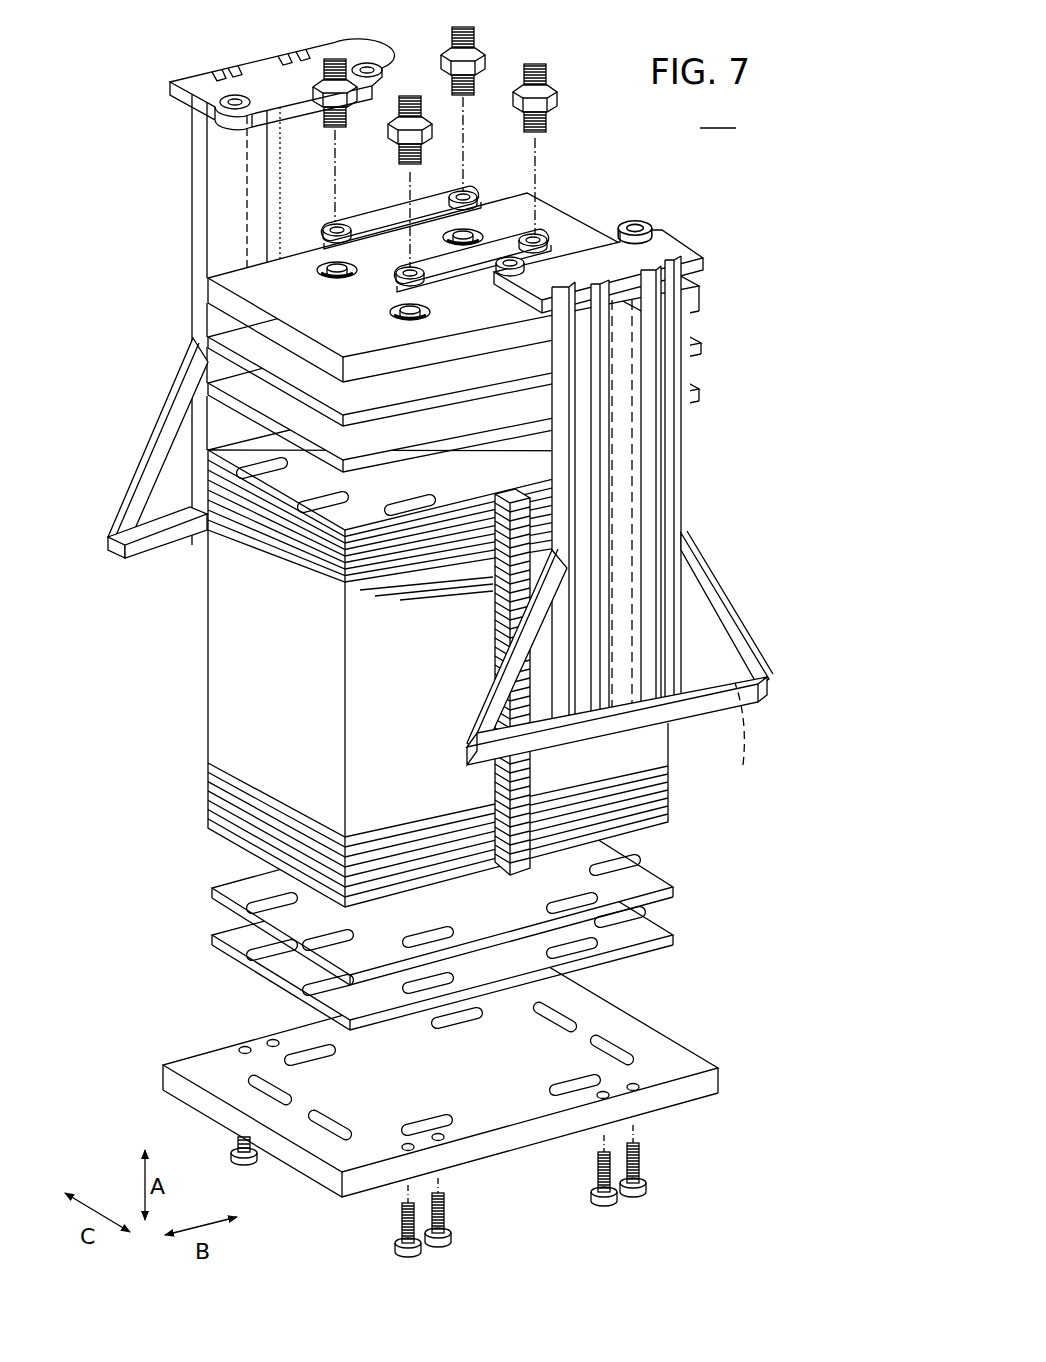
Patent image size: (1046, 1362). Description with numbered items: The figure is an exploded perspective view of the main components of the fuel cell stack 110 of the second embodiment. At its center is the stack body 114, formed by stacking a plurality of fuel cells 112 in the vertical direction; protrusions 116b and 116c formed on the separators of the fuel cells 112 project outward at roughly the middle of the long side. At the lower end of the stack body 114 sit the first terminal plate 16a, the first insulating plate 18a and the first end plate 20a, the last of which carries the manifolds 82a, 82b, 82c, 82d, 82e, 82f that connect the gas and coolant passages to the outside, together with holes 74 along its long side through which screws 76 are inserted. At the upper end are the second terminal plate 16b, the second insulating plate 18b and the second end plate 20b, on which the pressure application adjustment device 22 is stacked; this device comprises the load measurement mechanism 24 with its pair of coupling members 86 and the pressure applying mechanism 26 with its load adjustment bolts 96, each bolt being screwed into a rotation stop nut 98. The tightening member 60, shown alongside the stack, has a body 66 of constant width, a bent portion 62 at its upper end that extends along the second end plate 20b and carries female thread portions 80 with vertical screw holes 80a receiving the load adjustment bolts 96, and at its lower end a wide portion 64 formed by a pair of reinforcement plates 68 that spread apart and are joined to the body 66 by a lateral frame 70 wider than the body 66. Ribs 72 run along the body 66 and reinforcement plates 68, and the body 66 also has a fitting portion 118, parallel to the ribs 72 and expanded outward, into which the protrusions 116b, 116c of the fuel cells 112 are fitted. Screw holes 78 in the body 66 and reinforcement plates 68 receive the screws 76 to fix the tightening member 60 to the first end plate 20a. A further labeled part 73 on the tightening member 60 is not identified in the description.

The fuel cell stack 110 is at (721, 116).
The tightening member 60 is at (438, 298).
The vertical bar 73 is at (270, 155).
The load adjustment bolt 96 is at (452, 37).
The pressure applying mechanism 26 is at (496, 60).
The pressure application adjustment device 22 is at (562, 75).
The rotation stop nut 98 is at (556, 97).
The coupling member 86 is at (476, 198).
The female thread portion 80 is at (625, 206).
The screw hole 80a is at (637, 224).
The bent portion 62 is at (680, 250).
The second end plate 20b is at (204, 272).
The second insulating plate 18b is at (222, 338).
The second terminal plate 16b is at (222, 385).
The load measurement mechanism 24 is at (380, 312).
The rib 72 is at (590, 432).
The body 66 is at (640, 462).
The fitting portion 118 is at (623, 520).
The reinforcement plate 68 is at (725, 628).
The wide portion 64 is at (484, 695).
The lateral frame 70 is at (704, 696).
The screw hole 78 is at (749, 738).
The stack body 114 is at (378, 639).
The fuel cell 112 is at (205, 761).
The protrusion 116b is at (500, 588).
The protrusion 116c is at (505, 628).
The first terminal plate 16a is at (235, 882).
The first insulating plate 18a is at (235, 930).
The first end plate 20a is at (415, 1085).
The manifold 82a is at (612, 1052).
The manifold 82b is at (556, 1022).
The manifold 82c is at (455, 1030).
The manifold 82d is at (268, 1090).
The manifold 82e is at (338, 1126).
The manifold 82f is at (565, 1087).
The hole 74 is at (635, 1086).
The screw 76 is at (598, 1212).